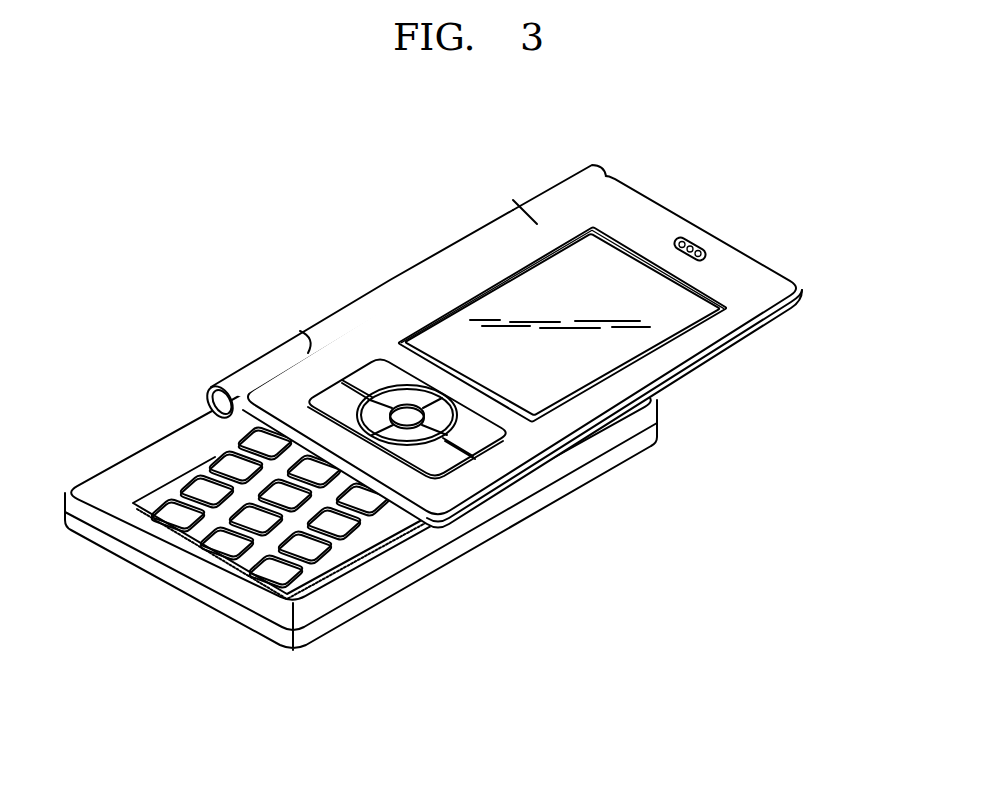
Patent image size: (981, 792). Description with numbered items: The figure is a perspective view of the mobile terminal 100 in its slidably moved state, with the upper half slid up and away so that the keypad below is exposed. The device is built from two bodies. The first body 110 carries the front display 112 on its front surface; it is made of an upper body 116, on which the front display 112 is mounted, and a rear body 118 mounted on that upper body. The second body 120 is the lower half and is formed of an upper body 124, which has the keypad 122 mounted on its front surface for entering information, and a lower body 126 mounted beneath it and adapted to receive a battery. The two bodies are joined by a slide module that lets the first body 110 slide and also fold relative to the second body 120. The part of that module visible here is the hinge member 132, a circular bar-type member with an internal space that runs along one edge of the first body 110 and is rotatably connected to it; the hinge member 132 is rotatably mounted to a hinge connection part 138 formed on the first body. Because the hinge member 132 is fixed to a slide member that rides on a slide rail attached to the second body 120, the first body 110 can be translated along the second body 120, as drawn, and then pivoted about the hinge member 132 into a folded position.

The mobile terminal 100 is at (485, 403).
The first body 110 is at (574, 351).
The front display 112 is at (520, 296).
The upper body 116 is at (806, 273).
The rear body 118 is at (806, 311).
The second body 120 is at (361, 471).
The keypad 122 is at (223, 543).
The upper body 124 is at (560, 477).
The lower body 126 is at (517, 517).
The hinge member 132 is at (391, 287).
The hinge connection part 138 is at (535, 202).